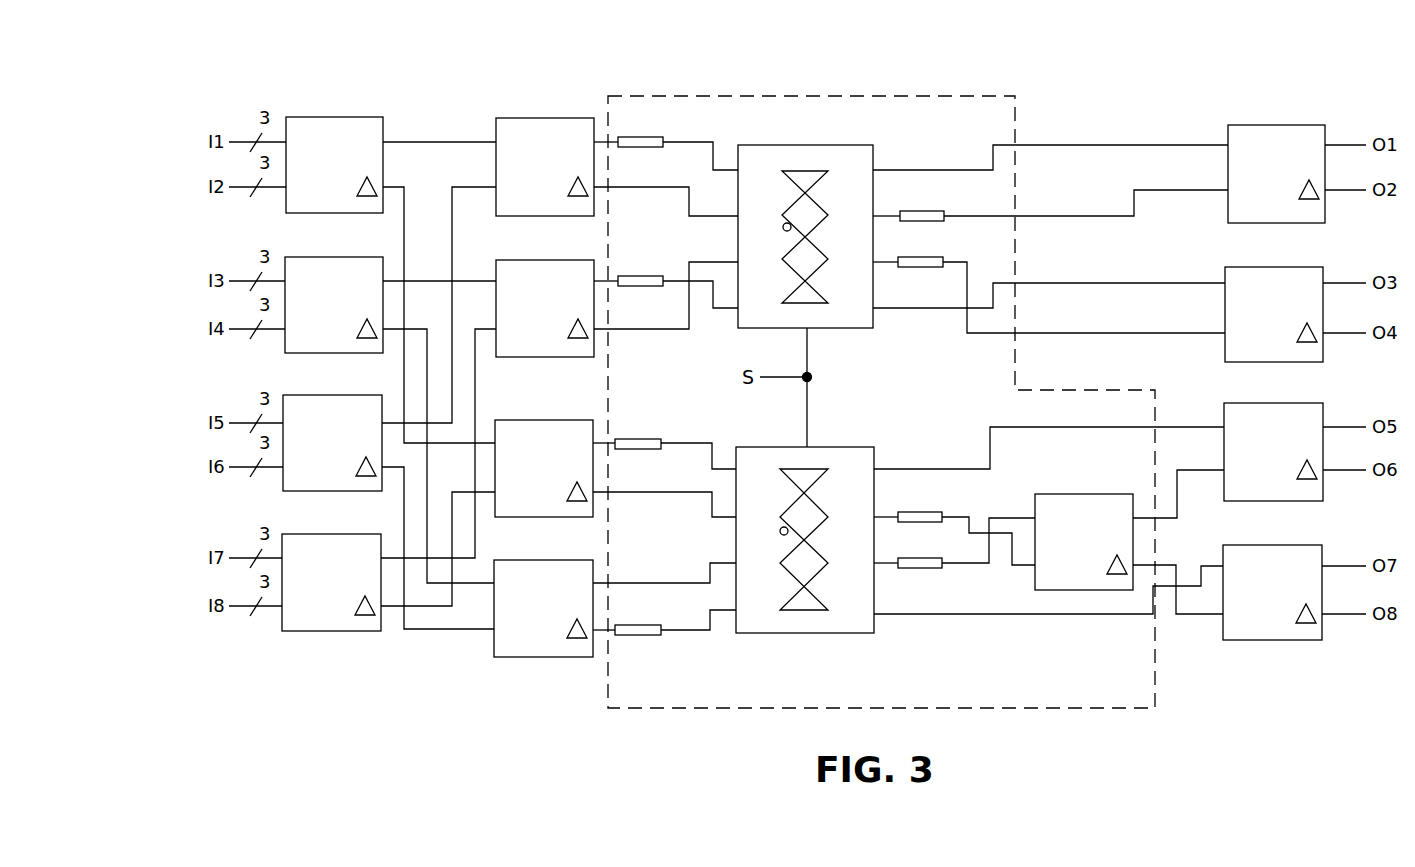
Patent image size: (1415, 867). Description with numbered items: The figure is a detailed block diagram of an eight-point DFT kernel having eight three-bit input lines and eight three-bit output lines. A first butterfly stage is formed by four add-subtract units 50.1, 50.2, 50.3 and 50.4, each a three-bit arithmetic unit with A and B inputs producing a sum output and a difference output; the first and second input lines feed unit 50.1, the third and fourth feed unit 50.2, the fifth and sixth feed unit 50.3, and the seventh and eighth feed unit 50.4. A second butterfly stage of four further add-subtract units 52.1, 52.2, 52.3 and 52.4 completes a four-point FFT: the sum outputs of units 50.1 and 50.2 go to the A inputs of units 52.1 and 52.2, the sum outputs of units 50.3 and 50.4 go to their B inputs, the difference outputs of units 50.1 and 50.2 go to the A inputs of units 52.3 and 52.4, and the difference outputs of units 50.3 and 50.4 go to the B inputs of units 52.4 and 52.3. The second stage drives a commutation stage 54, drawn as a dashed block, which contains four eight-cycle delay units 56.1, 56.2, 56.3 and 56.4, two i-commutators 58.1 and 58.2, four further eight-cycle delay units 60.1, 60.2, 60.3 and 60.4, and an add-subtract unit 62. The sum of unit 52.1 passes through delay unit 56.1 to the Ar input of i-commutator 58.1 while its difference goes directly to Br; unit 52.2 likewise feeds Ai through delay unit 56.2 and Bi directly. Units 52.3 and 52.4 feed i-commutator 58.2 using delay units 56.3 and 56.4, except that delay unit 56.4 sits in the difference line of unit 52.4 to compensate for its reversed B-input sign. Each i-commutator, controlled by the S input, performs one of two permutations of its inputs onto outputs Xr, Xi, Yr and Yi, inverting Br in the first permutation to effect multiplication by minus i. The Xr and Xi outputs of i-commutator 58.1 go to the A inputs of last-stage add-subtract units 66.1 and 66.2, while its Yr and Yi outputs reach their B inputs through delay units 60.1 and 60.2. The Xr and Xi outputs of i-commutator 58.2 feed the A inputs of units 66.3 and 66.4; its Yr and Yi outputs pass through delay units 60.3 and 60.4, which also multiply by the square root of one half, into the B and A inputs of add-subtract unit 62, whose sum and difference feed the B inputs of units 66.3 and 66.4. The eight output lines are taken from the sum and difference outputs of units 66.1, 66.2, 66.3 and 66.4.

The add-subtract unit 50.1 is at (324, 117).
The add-subtract unit 50.2 is at (321, 257).
The add-subtract unit 50.3 is at (324, 395).
The add-subtract unit 50.4 is at (320, 534).
The add-subtract unit 52.1 is at (523, 118).
The add-subtract unit 52.2 is at (530, 260).
The add-subtract unit 52.3 is at (528, 420).
The add-subtract unit 52.4 is at (528, 560).
The commutation stage 54 is at (790, 96).
The eight-cycle delay unit 56.1 is at (623, 147).
The eight-cycle delay unit 56.2 is at (621, 287).
The eight-cycle delay unit 56.3 is at (626, 449).
The eight-cycle delay unit 56.4 is at (629, 636).
The i-commutator 58.1 is at (788, 145).
The i-commutator 58.2 is at (765, 633).
The eight-cycle delay unit 60.1 is at (946, 211).
The eight-cycle delay unit 60.2 is at (946, 257).
The eight-cycle delay unit 60.3 is at (944, 515).
The eight-cycle delay unit 60.4 is at (905, 568).
The add-subtract unit 62 is at (1056, 494).
The add-subtract unit 66.1 is at (1248, 125).
The add-subtract unit 66.2 is at (1255, 267).
The add-subtract unit 66.3 is at (1256, 403).
The add-subtract unit 66.4 is at (1265, 526).